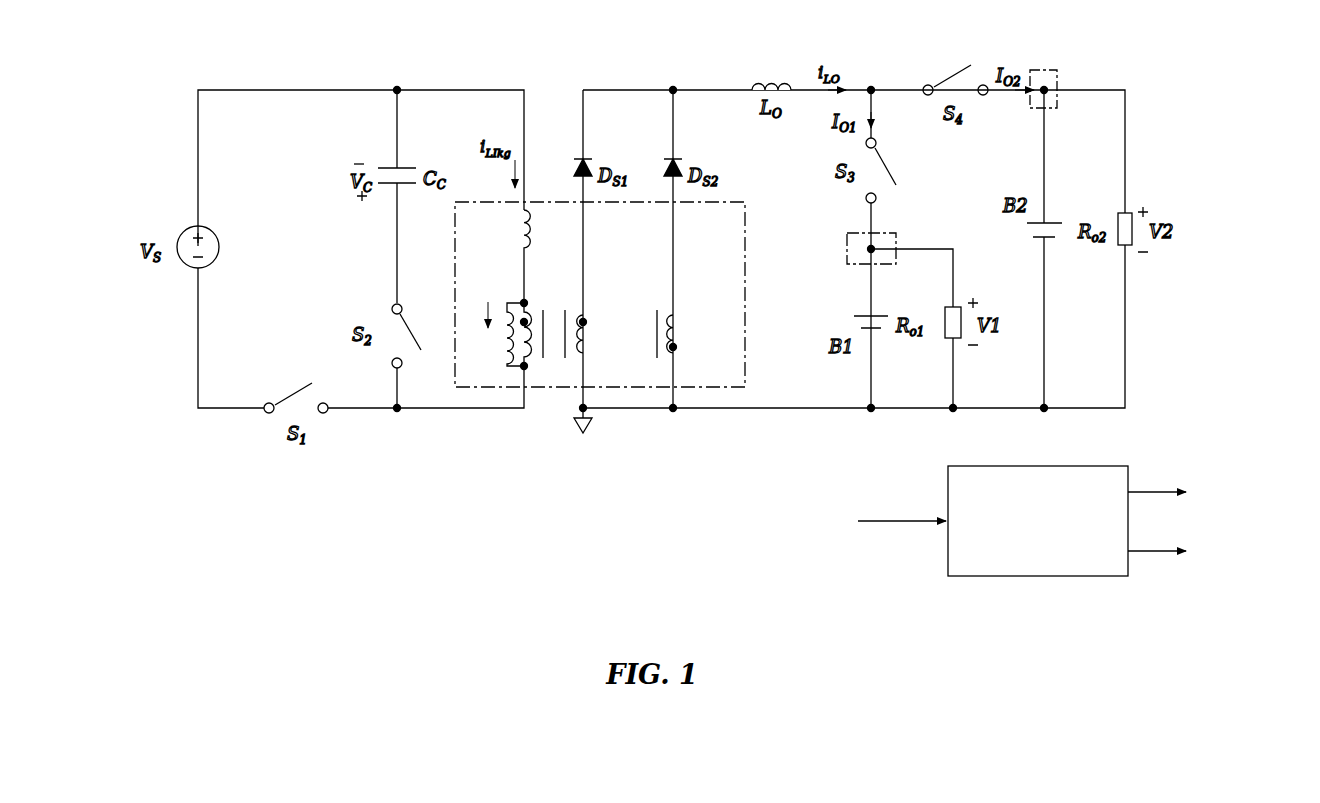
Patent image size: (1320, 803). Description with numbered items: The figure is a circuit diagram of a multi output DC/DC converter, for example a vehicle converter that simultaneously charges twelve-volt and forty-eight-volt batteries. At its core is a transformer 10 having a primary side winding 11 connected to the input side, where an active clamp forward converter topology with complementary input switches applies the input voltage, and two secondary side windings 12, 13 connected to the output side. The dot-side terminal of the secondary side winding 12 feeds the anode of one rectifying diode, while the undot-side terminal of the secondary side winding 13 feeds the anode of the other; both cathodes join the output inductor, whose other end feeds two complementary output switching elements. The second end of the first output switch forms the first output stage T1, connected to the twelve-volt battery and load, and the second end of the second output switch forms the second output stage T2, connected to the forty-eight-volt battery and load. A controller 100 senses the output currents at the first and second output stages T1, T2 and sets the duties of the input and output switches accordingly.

The transformer 10 is at (600, 344).
The primary side winding 11 is at (528, 347).
The secondary side winding 12 is at (586, 335).
The secondary side winding 13 is at (676, 335).
The controller 100 is at (1046, 576).
The first output stage T1 is at (896, 232).
The second output stage T2 is at (1052, 70).